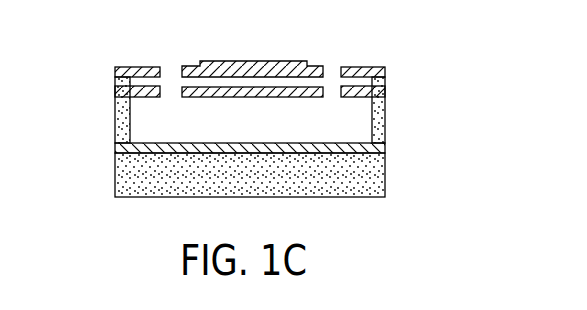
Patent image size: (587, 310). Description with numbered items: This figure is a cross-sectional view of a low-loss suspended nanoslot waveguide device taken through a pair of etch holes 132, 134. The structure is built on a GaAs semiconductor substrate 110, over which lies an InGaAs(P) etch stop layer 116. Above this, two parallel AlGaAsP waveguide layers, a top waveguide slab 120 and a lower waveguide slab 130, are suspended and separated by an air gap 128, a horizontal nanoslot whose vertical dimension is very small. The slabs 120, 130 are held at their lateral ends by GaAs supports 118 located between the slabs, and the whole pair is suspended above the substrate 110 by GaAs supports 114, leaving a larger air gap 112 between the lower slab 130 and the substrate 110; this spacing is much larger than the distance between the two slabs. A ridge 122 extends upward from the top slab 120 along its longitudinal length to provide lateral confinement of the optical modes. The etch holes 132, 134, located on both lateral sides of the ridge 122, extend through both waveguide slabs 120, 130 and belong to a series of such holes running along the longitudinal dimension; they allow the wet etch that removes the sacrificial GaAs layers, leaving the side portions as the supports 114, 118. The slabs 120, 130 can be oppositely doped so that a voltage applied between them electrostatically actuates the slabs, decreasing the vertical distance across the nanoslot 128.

The semiconductor substrate 110 is at (380, 182).
The air gap 112 is at (138, 113).
The supports 114 is at (382, 127).
The etch stop layer 116 is at (382, 150).
The supports 118 is at (120, 83).
The top waveguide slab 120 is at (238, 67).
The ridge 122 is at (281, 62).
The air gap 128 is at (183, 81).
The waveguide slab 130 is at (383, 92).
The etch hole 132 is at (336, 63).
The etch hole 134 is at (177, 63).